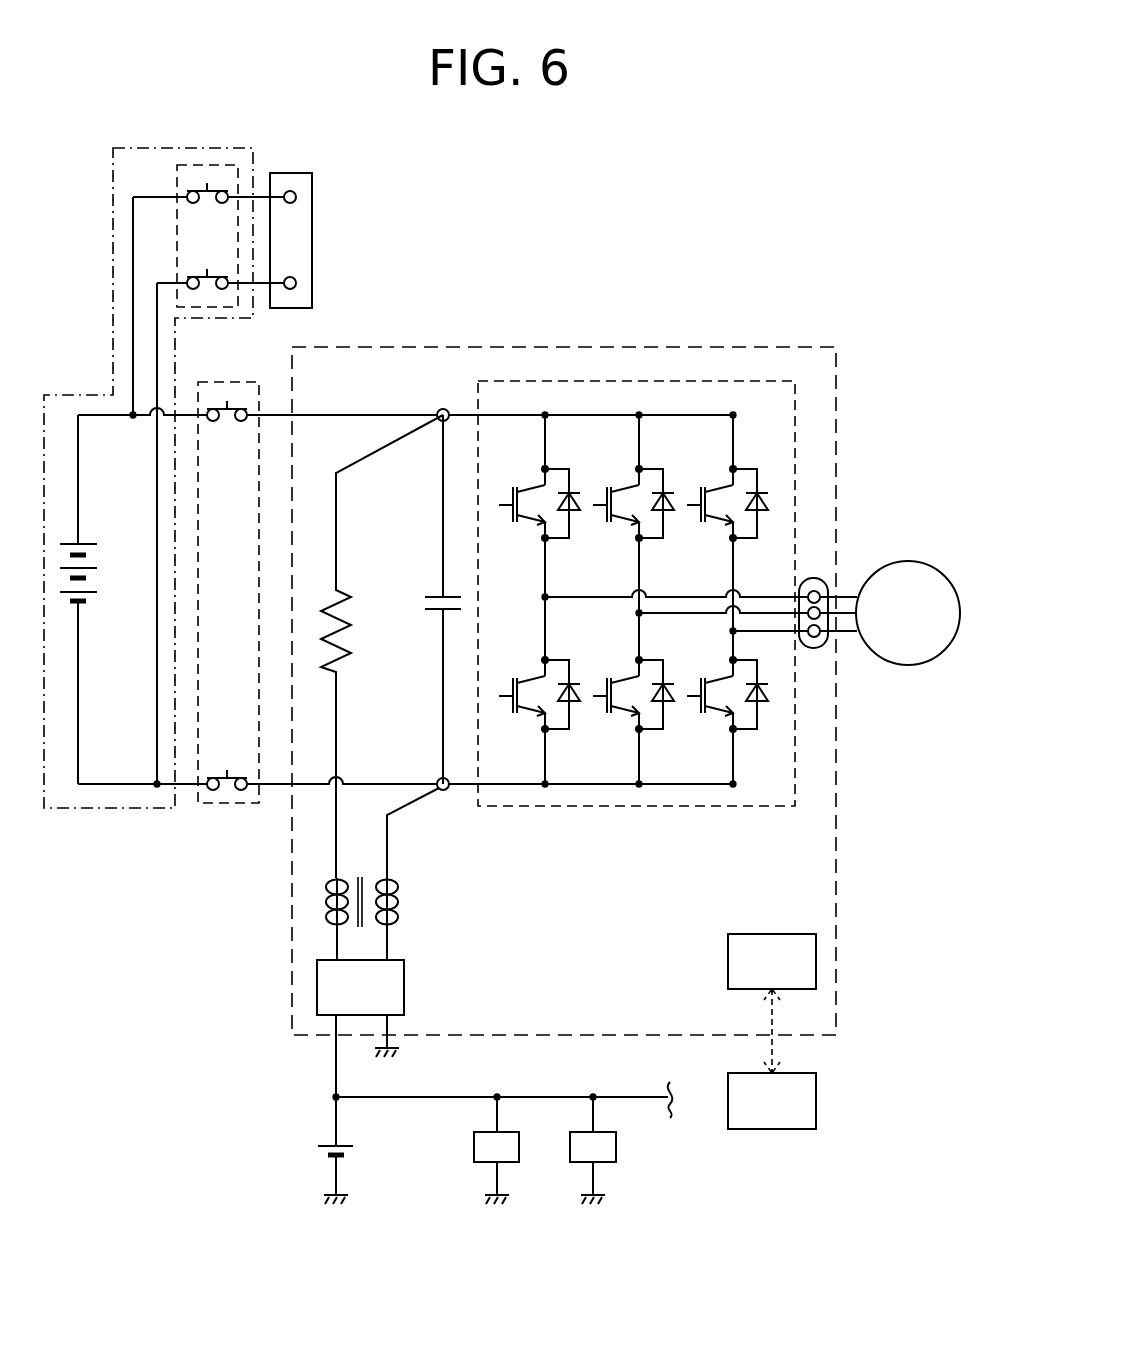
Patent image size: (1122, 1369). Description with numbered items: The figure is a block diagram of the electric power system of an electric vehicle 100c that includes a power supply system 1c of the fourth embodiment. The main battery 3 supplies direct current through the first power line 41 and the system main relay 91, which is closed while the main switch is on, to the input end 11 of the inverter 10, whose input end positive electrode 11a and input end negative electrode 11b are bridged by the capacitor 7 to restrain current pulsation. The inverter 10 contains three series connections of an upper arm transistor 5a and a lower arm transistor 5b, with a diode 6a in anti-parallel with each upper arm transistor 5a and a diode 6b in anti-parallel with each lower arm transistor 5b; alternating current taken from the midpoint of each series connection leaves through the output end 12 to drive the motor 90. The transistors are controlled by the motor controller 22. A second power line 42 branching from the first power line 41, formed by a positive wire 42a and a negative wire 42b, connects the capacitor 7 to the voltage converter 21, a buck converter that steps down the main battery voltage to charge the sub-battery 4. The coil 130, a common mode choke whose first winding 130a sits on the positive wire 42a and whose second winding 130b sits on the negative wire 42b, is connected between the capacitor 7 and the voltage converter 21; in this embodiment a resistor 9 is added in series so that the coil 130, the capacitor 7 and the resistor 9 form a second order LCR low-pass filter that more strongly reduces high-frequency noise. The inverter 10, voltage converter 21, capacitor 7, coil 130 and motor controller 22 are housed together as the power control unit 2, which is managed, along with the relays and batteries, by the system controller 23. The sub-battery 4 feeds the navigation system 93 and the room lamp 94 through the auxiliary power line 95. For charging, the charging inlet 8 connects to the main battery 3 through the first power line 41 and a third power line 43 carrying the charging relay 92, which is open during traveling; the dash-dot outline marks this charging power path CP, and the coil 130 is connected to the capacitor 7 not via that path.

The electric vehicle 100c is at (845, 205).
The power supply system 1c is at (672, 266).
The power control unit 2 is at (732, 344).
The inverter 10 is at (705, 808).
The upper arm transistor 5a is at (513, 490).
The diode 6a is at (577, 512).
The lower arm transistor 5b is at (513, 680).
The diode 6b is at (577, 703).
The capacitor 7 is at (432, 595).
The resistor 9 is at (345, 655).
The input end 11 is at (492, 576).
The input end positive electrode 11a is at (440, 409).
The input end negative electrode 11b is at (447, 790).
The output end 12 is at (825, 645).
The motor 90 is at (904, 560).
The first power line 41 is at (383, 413).
The second power line 42 is at (437, 848).
The positive wire 42a is at (338, 827).
The negative wire 42b is at (389, 825).
The coil 130 is at (445, 930).
The first winding 130a is at (345, 927).
The second winding 130b is at (396, 915).
The voltage converter 21 is at (404, 1000).
The motor controller 22 is at (728, 960).
The system controller 23 is at (770, 1130).
The main battery 3 is at (72, 540).
The sub-battery 4 is at (318, 1150).
The charging inlet 8 is at (298, 173).
The third power line 43 is at (163, 307).
The system main relay 91 is at (228, 803).
The charging relay 92 is at (203, 163).
The navigation system 93 is at (480, 1165).
The room lamp 94 is at (577, 1165).
The auxiliary power line 95 is at (640, 1100).
The charging power path CP is at (140, 808).